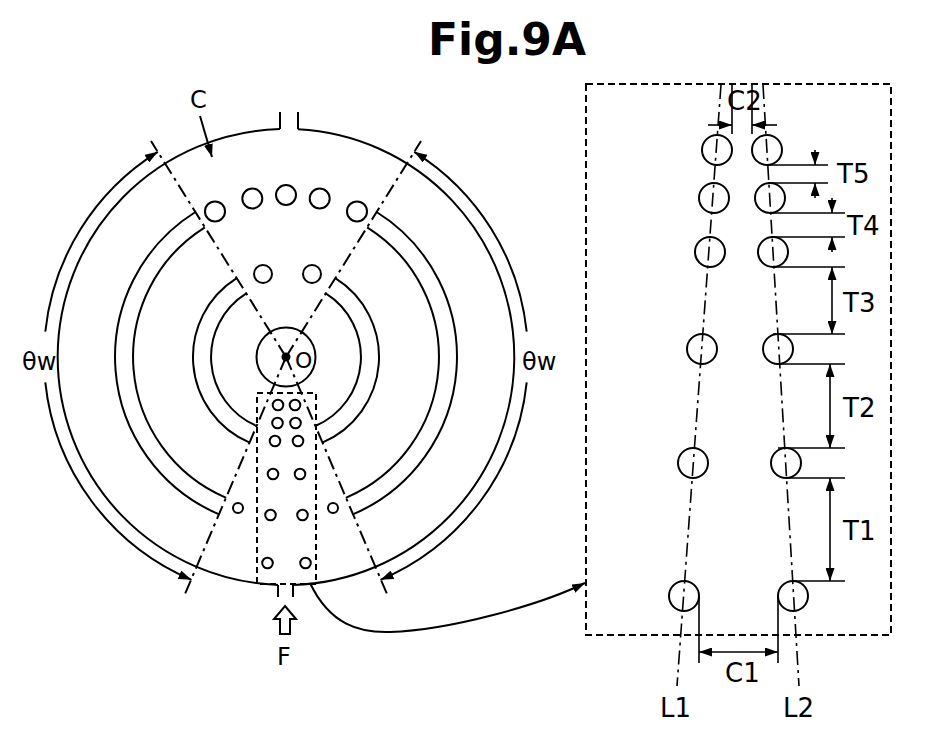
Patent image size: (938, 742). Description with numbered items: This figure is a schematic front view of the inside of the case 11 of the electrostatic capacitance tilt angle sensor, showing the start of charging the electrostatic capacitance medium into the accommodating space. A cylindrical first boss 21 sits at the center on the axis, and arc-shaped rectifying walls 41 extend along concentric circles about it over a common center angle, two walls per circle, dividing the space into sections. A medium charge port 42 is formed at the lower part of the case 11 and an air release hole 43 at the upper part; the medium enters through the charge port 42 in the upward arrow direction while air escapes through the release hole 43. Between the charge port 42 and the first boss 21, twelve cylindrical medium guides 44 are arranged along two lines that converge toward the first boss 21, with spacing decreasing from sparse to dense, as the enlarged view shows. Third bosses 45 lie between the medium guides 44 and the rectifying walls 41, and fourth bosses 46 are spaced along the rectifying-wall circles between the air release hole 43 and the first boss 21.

The case 11 is at (367, 138).
The first boss 21 is at (257, 363).
The rectifying walls 41 is at (193, 358).
The medium charge port 42 is at (280, 597).
The air release hole 43 is at (297, 121).
The medium guides 44 is at (305, 585).
The third bosses 45 is at (238, 514).
The fourth bosses 46 is at (375, 184).